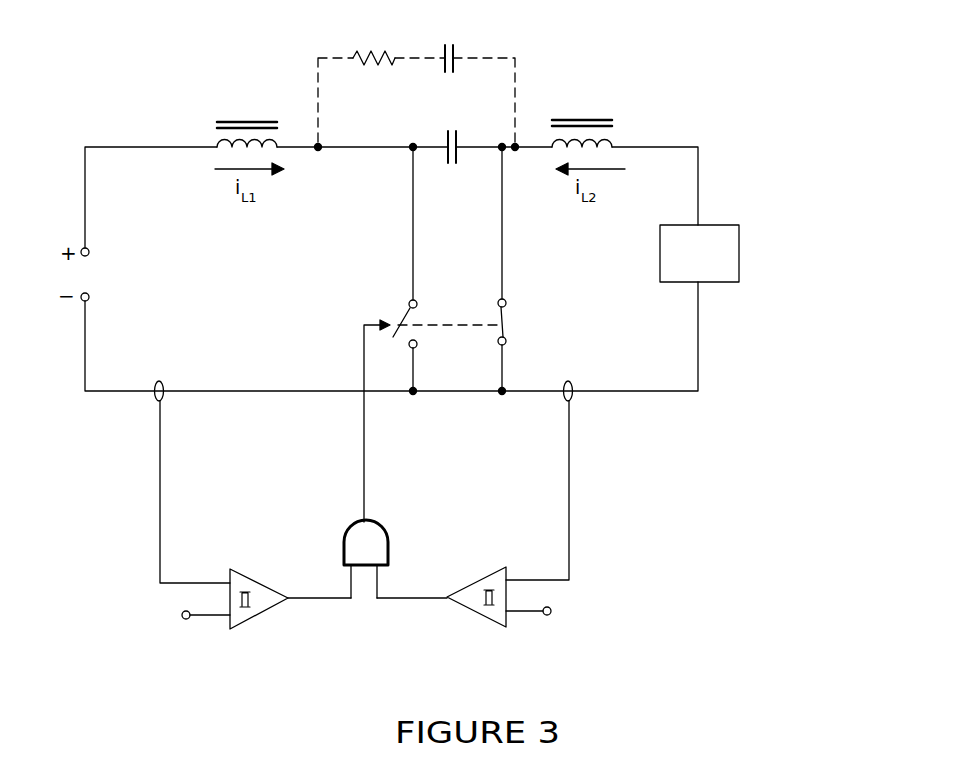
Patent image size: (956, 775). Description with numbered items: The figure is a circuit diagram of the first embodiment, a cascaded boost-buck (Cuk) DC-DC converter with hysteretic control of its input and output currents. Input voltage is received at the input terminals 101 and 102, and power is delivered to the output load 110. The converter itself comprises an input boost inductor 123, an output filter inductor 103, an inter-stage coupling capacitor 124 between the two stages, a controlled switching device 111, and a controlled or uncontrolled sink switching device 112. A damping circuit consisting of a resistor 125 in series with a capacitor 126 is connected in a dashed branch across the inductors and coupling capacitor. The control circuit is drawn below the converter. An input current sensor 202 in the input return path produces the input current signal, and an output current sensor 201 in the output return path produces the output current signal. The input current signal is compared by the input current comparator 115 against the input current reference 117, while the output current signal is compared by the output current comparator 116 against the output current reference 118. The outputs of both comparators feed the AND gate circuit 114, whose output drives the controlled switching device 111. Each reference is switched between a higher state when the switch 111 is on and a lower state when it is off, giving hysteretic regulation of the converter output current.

The input terminal 101 is at (100, 252).
The input terminal 102 is at (100, 297).
The output filter inductor 103 is at (620, 122).
The output load 110 is at (742, 243).
The controlled switching device 111 is at (398, 311).
The sink switching device 112 is at (517, 317).
The AND gate circuit 114 is at (334, 534).
The input current comparator 115 is at (262, 622).
The output current comparator 116 is at (465, 615).
The input current reference 117 is at (195, 625).
The output current reference 118 is at (537, 622).
The input boost inductor 123 is at (205, 130).
The inter-stage coupling capacitor 124 is at (437, 125).
The resistor 125 is at (352, 50).
The capacitor 126 is at (460, 50).
The output current sensor 201 is at (575, 400).
The input current sensor 202 is at (153, 405).